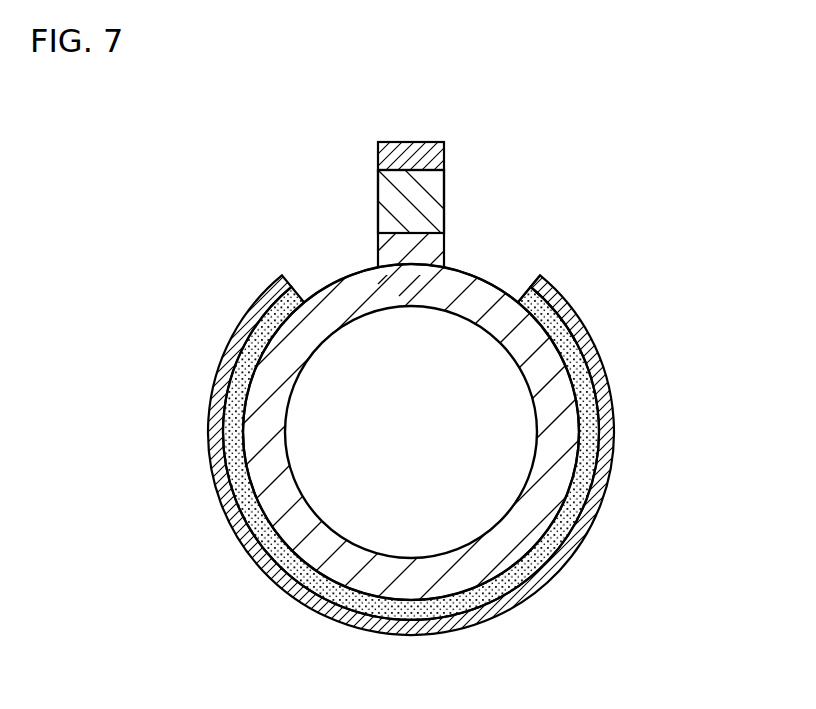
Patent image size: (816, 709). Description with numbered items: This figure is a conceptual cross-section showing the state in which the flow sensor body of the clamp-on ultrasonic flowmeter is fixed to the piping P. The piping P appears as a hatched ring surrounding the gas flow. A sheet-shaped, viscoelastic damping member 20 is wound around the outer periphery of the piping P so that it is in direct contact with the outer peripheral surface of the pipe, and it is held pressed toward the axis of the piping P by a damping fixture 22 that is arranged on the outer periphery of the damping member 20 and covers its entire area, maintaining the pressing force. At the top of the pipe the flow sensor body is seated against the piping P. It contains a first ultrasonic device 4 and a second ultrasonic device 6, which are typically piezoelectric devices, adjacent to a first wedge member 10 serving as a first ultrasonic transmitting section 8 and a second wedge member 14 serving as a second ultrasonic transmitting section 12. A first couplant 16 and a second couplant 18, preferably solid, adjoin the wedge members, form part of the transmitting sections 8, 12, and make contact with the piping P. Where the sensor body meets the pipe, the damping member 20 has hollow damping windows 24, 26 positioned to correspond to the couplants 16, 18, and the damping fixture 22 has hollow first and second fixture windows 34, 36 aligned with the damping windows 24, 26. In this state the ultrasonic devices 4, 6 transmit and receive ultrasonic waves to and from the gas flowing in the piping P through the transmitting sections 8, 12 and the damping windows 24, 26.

The first ultrasonic device 4 is at (444, 190).
The second ultrasonic device 6 is at (433, 150).
The first ultrasonic transmitting section 8 is at (312, 218).
The second ultrasonic transmitting section 12 is at (263, 180).
The first wedge member 10 is at (362, 209).
The second wedge member 14 is at (383, 195).
The first couplant 16 is at (354, 264).
The second couplant 18 is at (388, 249).
The damping member 20 is at (598, 443).
The damping fixture 22 is at (608, 396).
The first damping window 24 is at (441, 259).
The second damping window 26 is at (522, 302).
The first fixture window 34 is at (592, 280).
The second fixture window 36 is at (537, 277).
The piping P is at (522, 519).